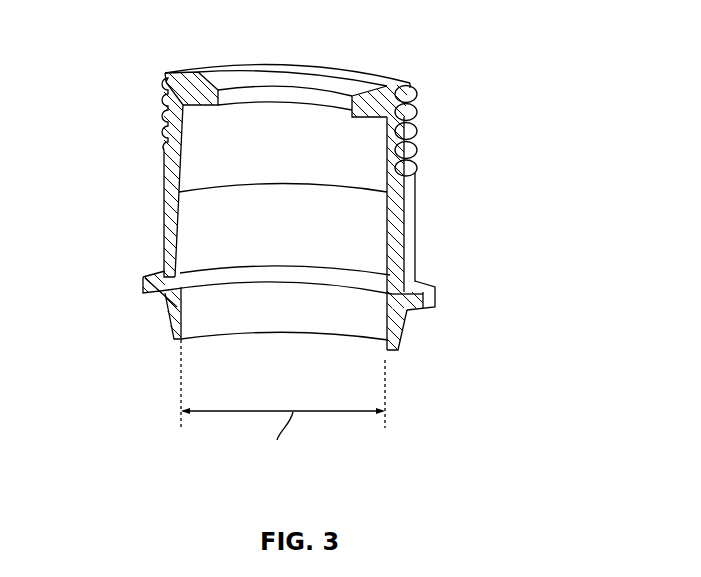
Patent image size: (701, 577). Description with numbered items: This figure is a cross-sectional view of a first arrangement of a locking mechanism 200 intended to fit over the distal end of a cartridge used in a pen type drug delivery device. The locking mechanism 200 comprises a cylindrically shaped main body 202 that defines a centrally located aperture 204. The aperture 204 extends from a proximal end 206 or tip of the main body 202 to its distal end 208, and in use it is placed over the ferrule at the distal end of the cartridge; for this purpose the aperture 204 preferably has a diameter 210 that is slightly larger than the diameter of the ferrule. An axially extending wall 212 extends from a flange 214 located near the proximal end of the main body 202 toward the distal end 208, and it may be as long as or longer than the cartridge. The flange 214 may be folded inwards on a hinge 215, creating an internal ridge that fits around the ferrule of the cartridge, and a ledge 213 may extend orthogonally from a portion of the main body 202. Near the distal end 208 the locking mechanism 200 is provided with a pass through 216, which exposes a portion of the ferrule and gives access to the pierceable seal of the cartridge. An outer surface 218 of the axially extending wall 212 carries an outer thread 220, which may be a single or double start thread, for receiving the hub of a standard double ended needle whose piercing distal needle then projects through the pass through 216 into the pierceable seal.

The locking mechanism 200 is at (423, 82).
The main body 202 is at (168, 253).
The aperture 204 is at (275, 315).
The proximal end 206 is at (455, 347).
The distal end 208 is at (310, 65).
The diameter D3 210 is at (335, 450).
The axially extending wall 212 is at (413, 217).
The ledge 213 is at (435, 288).
The flange 214 is at (410, 335).
The hinge 215 is at (157, 293).
The pass through 216 is at (272, 95).
The outer surface 218 is at (165, 173).
The outer thread 220 is at (167, 117).